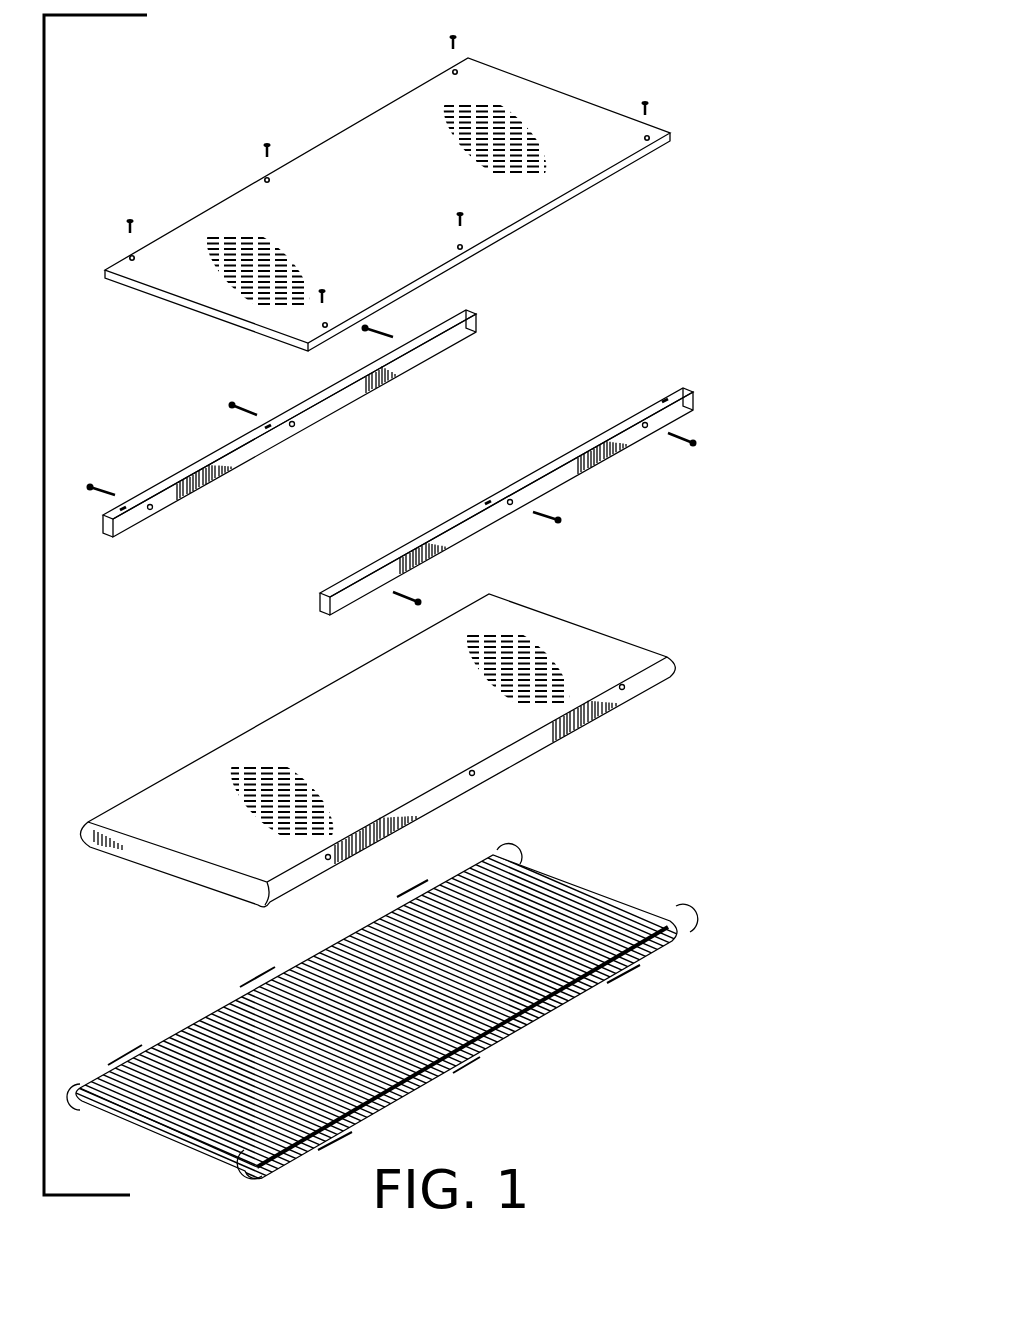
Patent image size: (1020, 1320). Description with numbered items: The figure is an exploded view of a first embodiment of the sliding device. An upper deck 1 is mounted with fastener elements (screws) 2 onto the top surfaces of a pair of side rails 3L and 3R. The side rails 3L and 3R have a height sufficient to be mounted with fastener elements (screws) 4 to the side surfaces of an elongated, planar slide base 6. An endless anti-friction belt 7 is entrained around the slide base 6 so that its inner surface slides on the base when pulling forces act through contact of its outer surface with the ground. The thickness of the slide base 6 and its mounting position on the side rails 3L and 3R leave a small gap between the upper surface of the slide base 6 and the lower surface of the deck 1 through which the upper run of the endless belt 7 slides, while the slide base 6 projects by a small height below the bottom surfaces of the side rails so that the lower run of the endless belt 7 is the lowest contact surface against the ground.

The upper deck 1 is at (590, 162).
The fastener elements (screws) 2 is at (263, 147).
The left side rail 3L is at (443, 342).
The right side rail 3R is at (475, 527).
The fastener elements (screws) 4 is at (375, 328).
The slide base 6 is at (513, 758).
The endless anti-friction belt 7 is at (523, 1027).